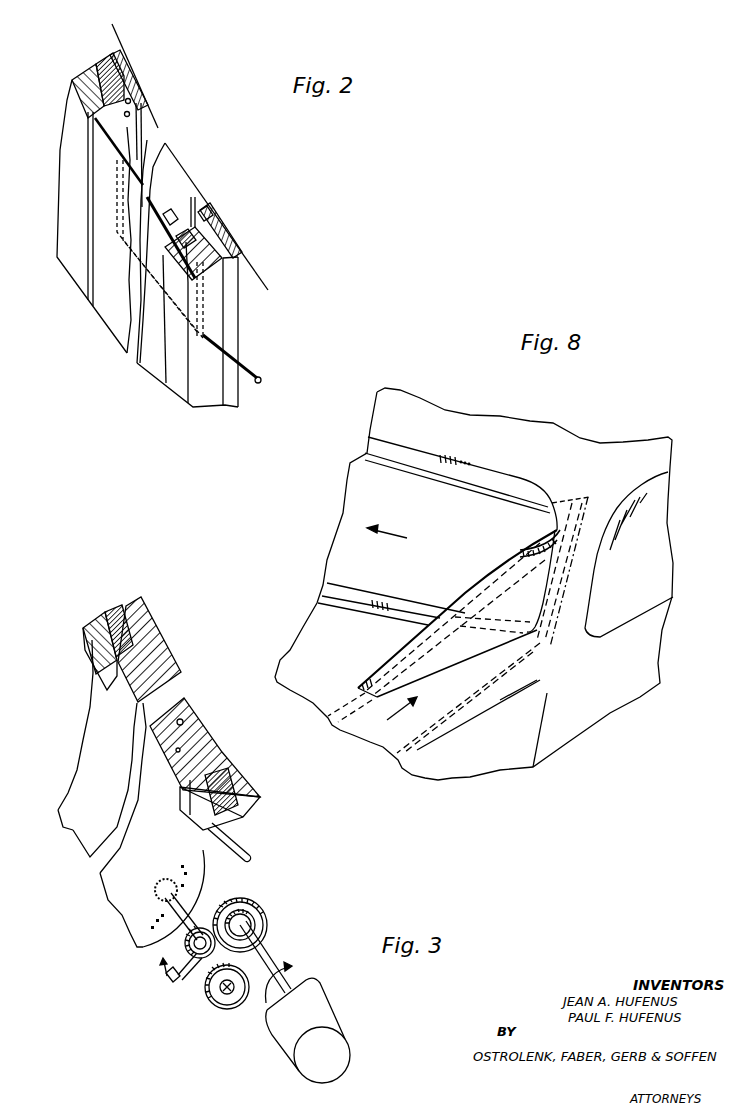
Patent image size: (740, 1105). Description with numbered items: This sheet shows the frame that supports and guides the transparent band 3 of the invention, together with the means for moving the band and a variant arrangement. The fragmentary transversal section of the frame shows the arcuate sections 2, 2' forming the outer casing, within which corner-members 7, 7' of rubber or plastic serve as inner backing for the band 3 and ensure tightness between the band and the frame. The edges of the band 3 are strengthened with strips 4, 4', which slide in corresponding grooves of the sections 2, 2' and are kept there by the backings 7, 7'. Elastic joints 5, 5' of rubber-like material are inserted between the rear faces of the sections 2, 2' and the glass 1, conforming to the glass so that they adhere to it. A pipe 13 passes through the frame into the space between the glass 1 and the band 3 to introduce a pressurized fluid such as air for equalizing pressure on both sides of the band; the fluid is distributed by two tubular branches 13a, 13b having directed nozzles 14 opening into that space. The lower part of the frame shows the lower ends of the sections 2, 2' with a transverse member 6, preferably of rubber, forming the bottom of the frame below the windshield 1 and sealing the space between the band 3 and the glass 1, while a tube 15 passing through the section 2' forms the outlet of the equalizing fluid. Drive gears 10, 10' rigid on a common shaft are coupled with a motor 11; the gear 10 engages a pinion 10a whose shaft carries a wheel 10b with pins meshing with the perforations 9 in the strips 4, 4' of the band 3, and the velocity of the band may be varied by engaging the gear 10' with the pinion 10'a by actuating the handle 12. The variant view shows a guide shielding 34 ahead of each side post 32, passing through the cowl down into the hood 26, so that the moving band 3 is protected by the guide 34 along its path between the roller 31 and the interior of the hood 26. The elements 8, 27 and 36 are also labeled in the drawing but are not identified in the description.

In FIG. 2, the glass 1 is at (258, 268).
In FIG. 8, the glass 1 is at (480, 470).
In FIG. 2, the arcuate section 2 is at (82, 216).
In FIG. 8, the arcuate section 2 is at (347, 468).
In FIG. 3, the arcuate section 2 is at (71, 711).
In FIG. 2, the arcuate section 2' is at (220, 339).
In FIG. 8, the arcuate section 2' is at (303, 571).
In FIG. 3, the arcuate section 2' is at (267, 808).
In FIG. 2, the band 3 is at (113, 143).
In FIG. 8, the band 3 is at (380, 503).
In FIG. 3, the band 3 is at (107, 718).
In FIG. 2, the strip 4 is at (99, 107).
In FIG. 3, the strip 4 is at (82, 715).
In FIG. 2, the strip 4' is at (236, 275).
In FIG. 3, the strip 4' is at (192, 858).
In FIG. 2, the elastic joint 5 is at (138, 71).
In FIG. 2, the elastic joint 5' is at (247, 230).
In FIG. 3, the transverse member 6 is at (215, 737).
In FIG. 2, the corner-member 7 is at (163, 104).
In FIG. 2, the corner-member 7' is at (184, 209).
In FIG. 2, the needle block 8 is at (95, 65).
In FIG. 3, the needle block 8 is at (108, 620).
In FIG. 3, the perforations 9 is at (198, 877).
In FIG. 3, the drive gear 10 is at (261, 908).
In FIG. 3, the drive gear 10' is at (282, 946).
In FIG. 3, the pinion 10a is at (195, 957).
In FIG. 3, the pinion 10'a is at (220, 1001).
In FIG. 3, the wheel 10b is at (155, 900).
In FIG. 3, the motor 11 is at (283, 1023).
In FIG. 3, the handle 12 is at (190, 976).
In FIG. 2, the pipe 13 is at (250, 367).
In FIG. 2, the tubular branch 13a is at (130, 100).
In FIG. 2, the tubular branch 13b is at (207, 310).
In FIG. 2, the nozzles 14 is at (142, 125).
In FIG. 3, the tube 15 is at (184, 698).
In FIG. 8, the hood 26 is at (322, 650).
In FIG. 8, the fabric flap 27 is at (572, 447).
In FIG. 8, the roller 31 is at (570, 585).
In FIG. 8, the side post 32 is at (588, 555).
In FIG. 8, the guide shielding 34 is at (515, 640).
In FIG. 2, the rail notch 36 is at (207, 215).